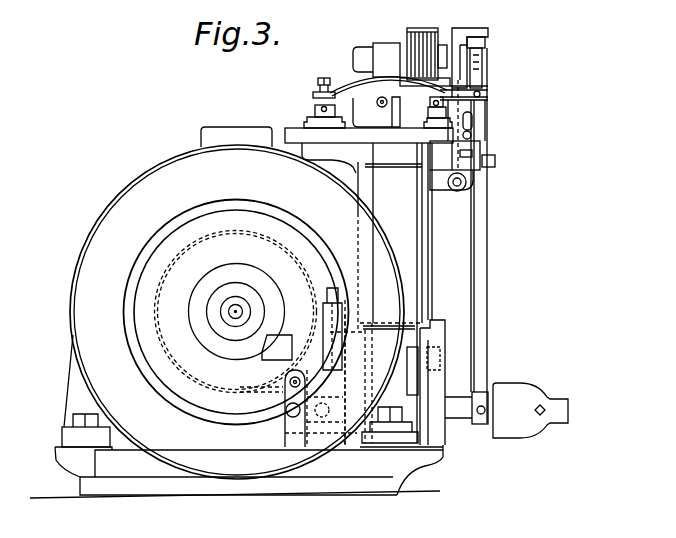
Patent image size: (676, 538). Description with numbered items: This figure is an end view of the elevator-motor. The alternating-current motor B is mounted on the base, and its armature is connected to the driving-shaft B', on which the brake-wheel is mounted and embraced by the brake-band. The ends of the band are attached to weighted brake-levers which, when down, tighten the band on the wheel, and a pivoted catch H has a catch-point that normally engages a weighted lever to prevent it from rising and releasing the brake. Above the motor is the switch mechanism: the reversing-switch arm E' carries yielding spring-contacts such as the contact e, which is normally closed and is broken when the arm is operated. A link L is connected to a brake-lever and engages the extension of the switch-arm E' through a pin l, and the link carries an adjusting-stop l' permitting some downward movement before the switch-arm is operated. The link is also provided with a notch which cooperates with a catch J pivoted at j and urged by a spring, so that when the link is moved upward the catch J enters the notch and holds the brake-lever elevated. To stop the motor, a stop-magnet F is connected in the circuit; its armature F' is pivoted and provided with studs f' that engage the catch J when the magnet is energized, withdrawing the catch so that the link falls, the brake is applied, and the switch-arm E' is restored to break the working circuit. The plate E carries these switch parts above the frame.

The alternating-current motor B is at (242, 311).
The driving-shaft B' is at (222, 308).
The top plate E is at (359, 139).
The reversing-switch arm E' is at (380, 89).
The contact e is at (430, 112).
The stop-magnet F is at (401, 49).
The armature F' is at (469, 52).
The pivot j is at (456, 195).
The catch J is at (452, 103).
The link L is at (475, 236).
The pin l is at (472, 88).
The adjusting-stop l' is at (488, 59).
The studs f' is at (491, 157).
The catch H is at (416, 377).